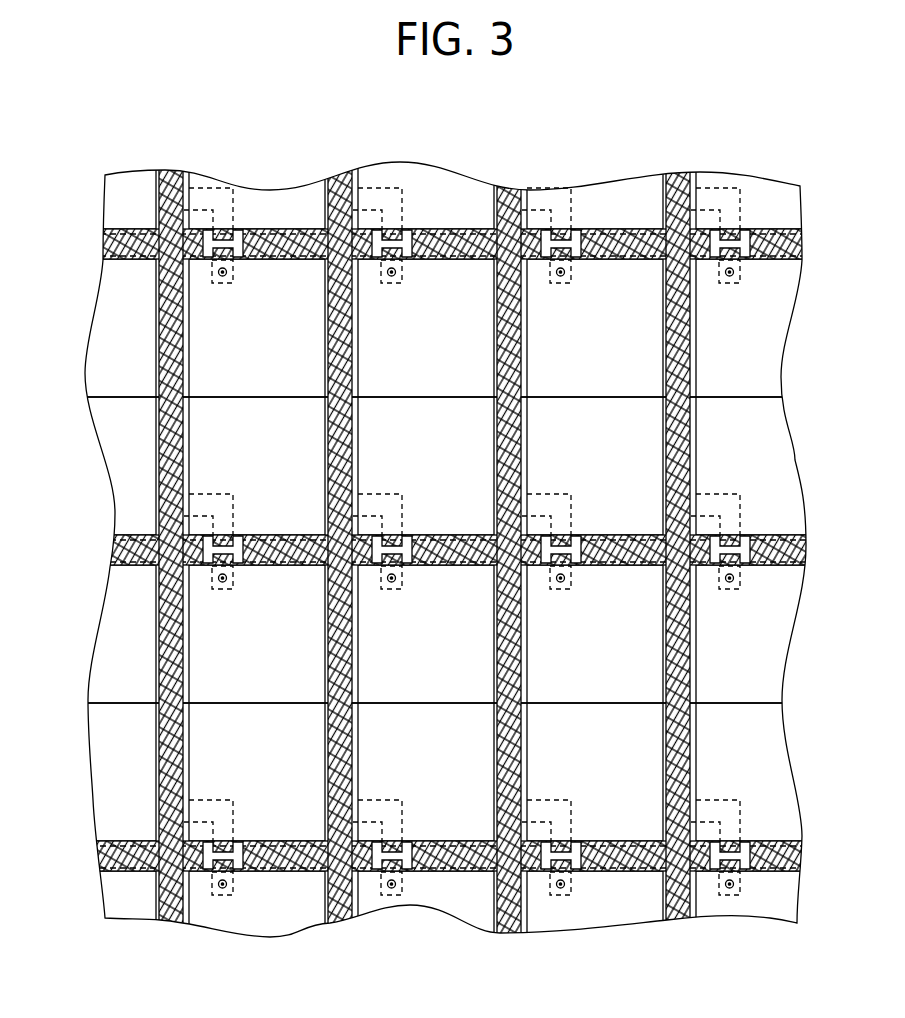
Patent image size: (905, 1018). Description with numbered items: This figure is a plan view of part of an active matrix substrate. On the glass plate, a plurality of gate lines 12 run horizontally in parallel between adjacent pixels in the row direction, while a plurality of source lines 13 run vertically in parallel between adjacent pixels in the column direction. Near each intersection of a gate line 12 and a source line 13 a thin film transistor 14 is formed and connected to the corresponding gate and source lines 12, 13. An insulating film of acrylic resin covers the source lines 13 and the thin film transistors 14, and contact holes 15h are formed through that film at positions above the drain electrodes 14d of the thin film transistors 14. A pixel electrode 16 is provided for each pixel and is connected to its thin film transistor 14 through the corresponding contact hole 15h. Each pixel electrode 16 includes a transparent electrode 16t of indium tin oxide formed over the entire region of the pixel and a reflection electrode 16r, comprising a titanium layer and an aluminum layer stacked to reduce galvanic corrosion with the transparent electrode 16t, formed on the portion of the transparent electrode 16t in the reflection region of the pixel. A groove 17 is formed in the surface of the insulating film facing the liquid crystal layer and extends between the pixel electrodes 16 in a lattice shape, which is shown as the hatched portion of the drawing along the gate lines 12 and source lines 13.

The gate line 12 is at (110, 242).
The source line 13 is at (677, 178).
The thin film transistor 14 is at (756, 854).
The drain electrode 14d is at (476, 575).
The contact hole 15h is at (467, 578).
The pixel electrode 16 is at (445, 547).
The reflection electrode 16r is at (600, 678).
The transparent electrode 16t is at (600, 755).
The groove 17 is at (802, 229).